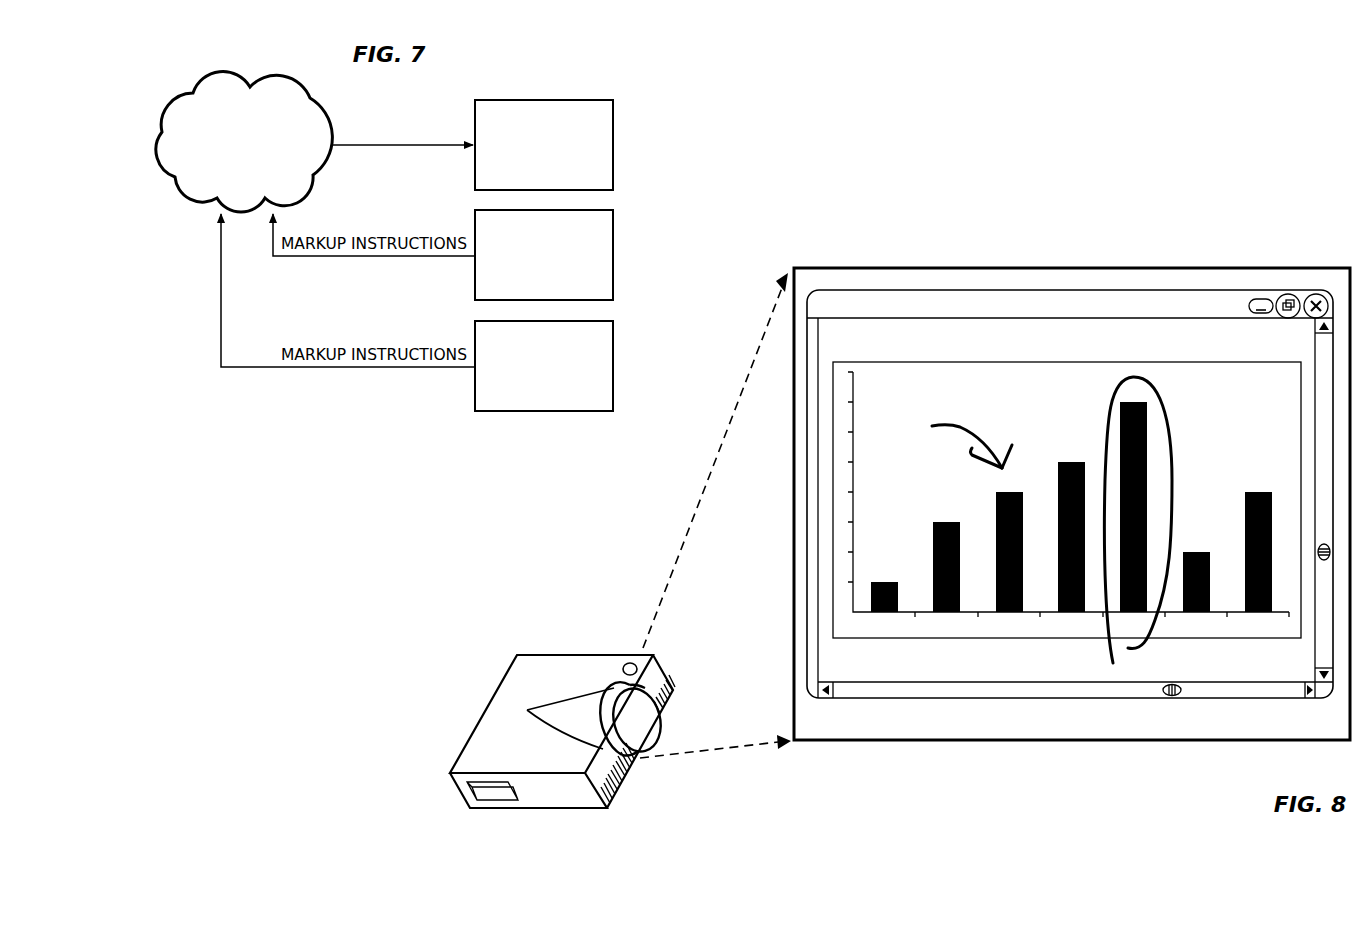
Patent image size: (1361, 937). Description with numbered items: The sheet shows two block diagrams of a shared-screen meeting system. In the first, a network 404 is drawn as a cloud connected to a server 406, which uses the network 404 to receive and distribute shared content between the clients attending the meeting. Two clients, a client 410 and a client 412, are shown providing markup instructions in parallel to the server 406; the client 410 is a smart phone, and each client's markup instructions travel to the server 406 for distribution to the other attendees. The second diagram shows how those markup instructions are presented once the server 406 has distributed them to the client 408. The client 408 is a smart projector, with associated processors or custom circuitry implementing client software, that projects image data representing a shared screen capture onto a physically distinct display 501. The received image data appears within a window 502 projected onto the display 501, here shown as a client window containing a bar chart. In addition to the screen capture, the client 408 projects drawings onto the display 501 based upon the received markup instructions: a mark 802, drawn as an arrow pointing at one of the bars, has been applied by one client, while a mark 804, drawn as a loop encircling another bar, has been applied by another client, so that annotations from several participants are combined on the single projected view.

In FIG. 7, the network 404 is at (230, 173).
In FIG. 7, the server 406 is at (528, 174).
In FIG. 8, the client 408 is at (598, 655).
In FIG. 7, the client 410 is at (528, 284).
In FIG. 7, the client 412 is at (528, 395).
In FIG. 8, the display 501 is at (1047, 742).
In FIG. 8, the window 502 is at (948, 698).
In FIG. 8, the mark 802 is at (971, 425).
In FIG. 8, the mark 804 is at (1170, 404).